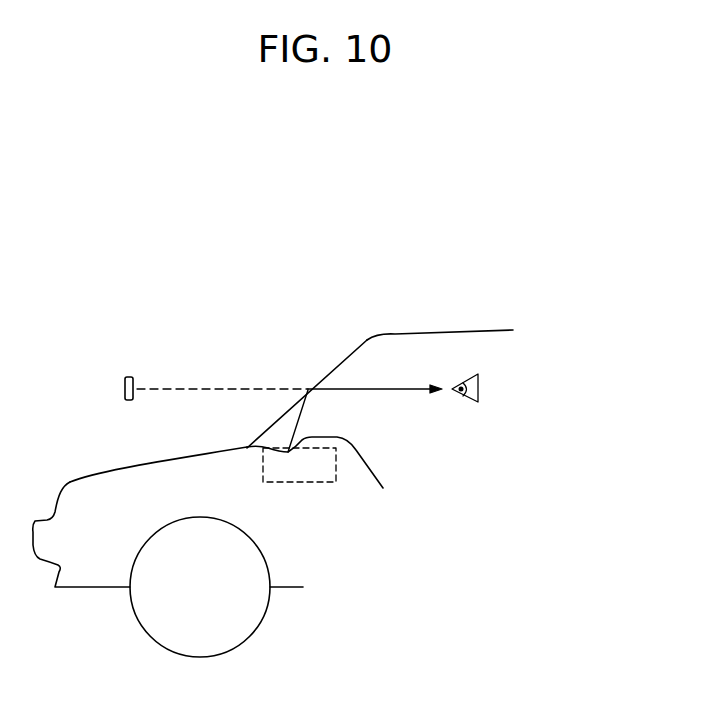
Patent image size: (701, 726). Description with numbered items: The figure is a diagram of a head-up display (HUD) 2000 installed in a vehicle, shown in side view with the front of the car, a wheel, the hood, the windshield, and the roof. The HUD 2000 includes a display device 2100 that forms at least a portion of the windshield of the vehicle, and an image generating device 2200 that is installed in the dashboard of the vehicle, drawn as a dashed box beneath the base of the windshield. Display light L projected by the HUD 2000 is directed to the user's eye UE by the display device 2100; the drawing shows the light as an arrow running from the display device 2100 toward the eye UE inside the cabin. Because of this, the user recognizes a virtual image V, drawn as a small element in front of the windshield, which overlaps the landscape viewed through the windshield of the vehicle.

The head-up display (HUD) 2000 is at (519, 260).
The display device 2100 is at (335, 362).
The image generating device 2200 is at (310, 482).
The virtual image V is at (127, 375).
The display light L is at (390, 384).
The user's eye UE is at (478, 385).